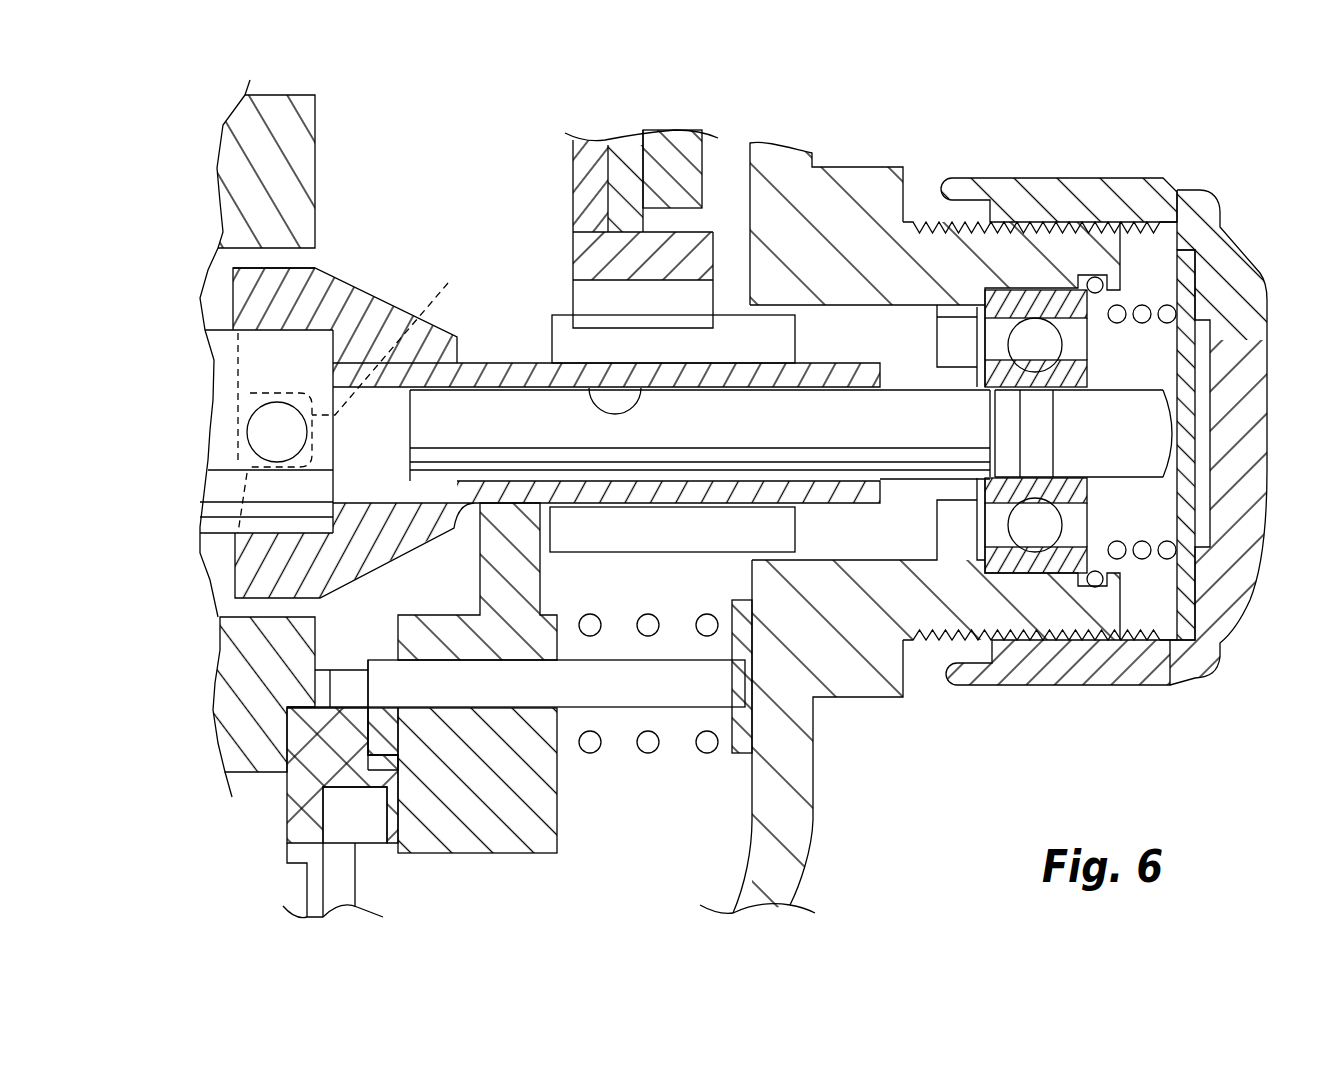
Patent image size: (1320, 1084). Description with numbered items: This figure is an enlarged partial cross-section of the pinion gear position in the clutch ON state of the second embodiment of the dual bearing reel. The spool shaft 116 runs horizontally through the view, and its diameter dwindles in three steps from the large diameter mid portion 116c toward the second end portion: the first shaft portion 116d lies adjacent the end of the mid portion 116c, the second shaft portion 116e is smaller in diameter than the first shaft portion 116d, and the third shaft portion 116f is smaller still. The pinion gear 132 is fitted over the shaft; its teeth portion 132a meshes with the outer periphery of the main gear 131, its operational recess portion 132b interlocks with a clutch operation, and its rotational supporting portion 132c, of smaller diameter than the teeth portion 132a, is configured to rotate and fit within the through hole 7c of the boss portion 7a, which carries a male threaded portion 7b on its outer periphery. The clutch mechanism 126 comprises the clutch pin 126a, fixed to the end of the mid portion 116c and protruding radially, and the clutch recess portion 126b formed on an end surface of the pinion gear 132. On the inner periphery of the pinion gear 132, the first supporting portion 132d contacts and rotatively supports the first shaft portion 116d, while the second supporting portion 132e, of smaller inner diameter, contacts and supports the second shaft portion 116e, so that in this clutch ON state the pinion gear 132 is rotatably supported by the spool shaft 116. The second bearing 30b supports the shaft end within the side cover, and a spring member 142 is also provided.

The spool shaft 116 is at (213, 510).
The large diameter mid portion 116c is at (302, 357).
The first shaft portion 116d is at (420, 380).
The second shaft portion 116e is at (733, 417).
The third shaft portion 116f is at (950, 452).
The clutch mechanism 126 is at (237, 432).
The clutch pin 126a is at (280, 432).
The clutch recess portion 126b is at (410, 333).
The main gear 131 is at (687, 160).
The pinion gear 132 is at (419, 288).
The teeth portion 132a is at (558, 313).
The operational recess portion 132b is at (517, 503).
The rotational supporting portion 132c is at (830, 503).
The first supporting portion 132d is at (645, 388).
The second supporting portion 132e is at (765, 252).
The boss portion 7a is at (1045, 227).
The male threaded portion 7b is at (997, 227).
The through hole 7c is at (962, 485).
The second bearing 30b is at (1033, 573).
The spring member 142 is at (1143, 577).